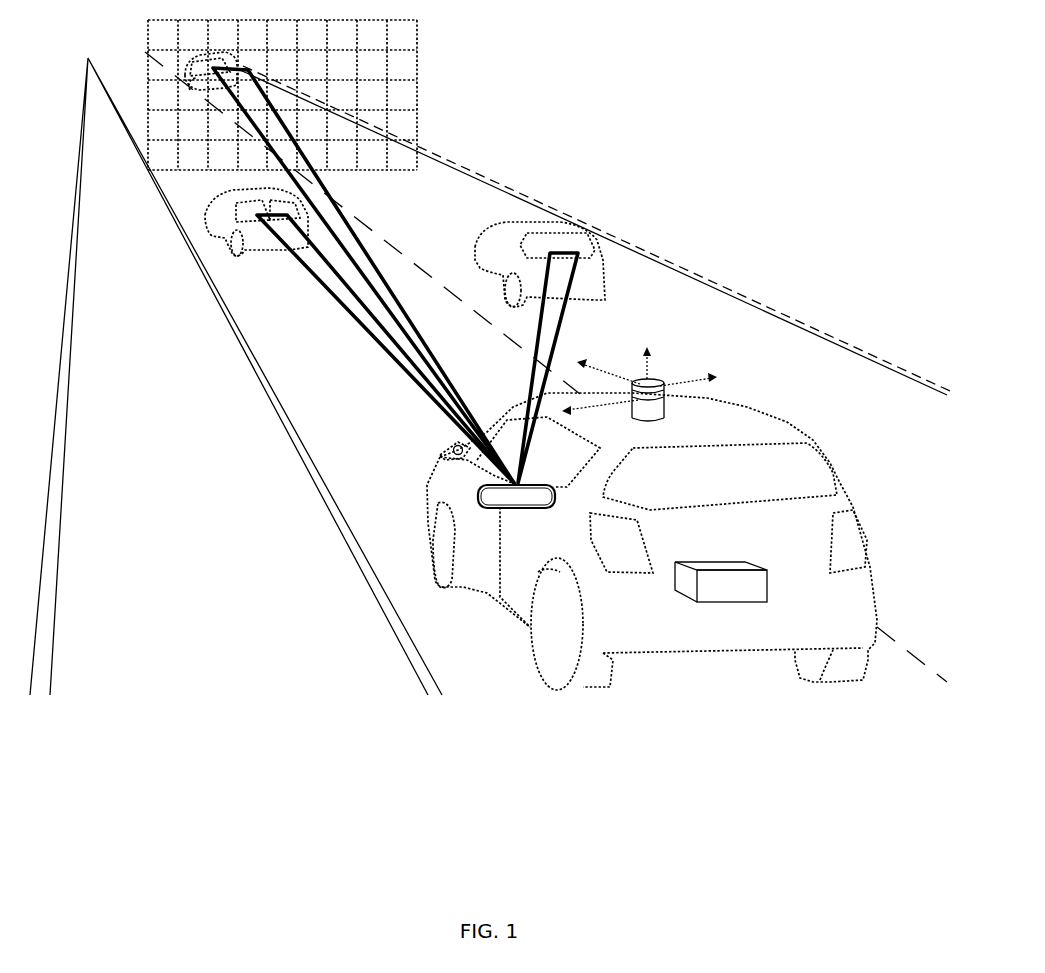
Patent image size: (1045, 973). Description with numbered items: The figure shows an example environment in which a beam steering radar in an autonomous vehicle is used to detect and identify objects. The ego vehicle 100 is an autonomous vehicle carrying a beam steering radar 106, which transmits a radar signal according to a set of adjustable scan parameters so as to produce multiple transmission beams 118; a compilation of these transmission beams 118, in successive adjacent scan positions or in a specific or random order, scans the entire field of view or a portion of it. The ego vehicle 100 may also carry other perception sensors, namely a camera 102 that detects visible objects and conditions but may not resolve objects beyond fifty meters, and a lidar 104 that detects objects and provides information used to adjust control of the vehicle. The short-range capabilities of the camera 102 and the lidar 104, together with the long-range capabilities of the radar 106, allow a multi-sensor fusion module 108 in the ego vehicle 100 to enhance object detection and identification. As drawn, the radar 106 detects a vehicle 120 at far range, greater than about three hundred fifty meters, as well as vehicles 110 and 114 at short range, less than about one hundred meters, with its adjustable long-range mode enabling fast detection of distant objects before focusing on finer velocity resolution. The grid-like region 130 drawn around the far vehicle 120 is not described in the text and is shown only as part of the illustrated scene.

The ego vehicle 100 is at (803, 433).
The camera 102 is at (452, 447).
The lidar 104 is at (652, 378).
The beam steering radar 106 is at (522, 508).
The multi-sensor fusion module 108 is at (742, 563).
The vehicle 110 is at (262, 252).
The vehicle 114 is at (605, 280).
The transmission beams 118 is at (355, 228).
The vehicle 120 is at (213, 52).
The occupancy grid 130 is at (417, 66).